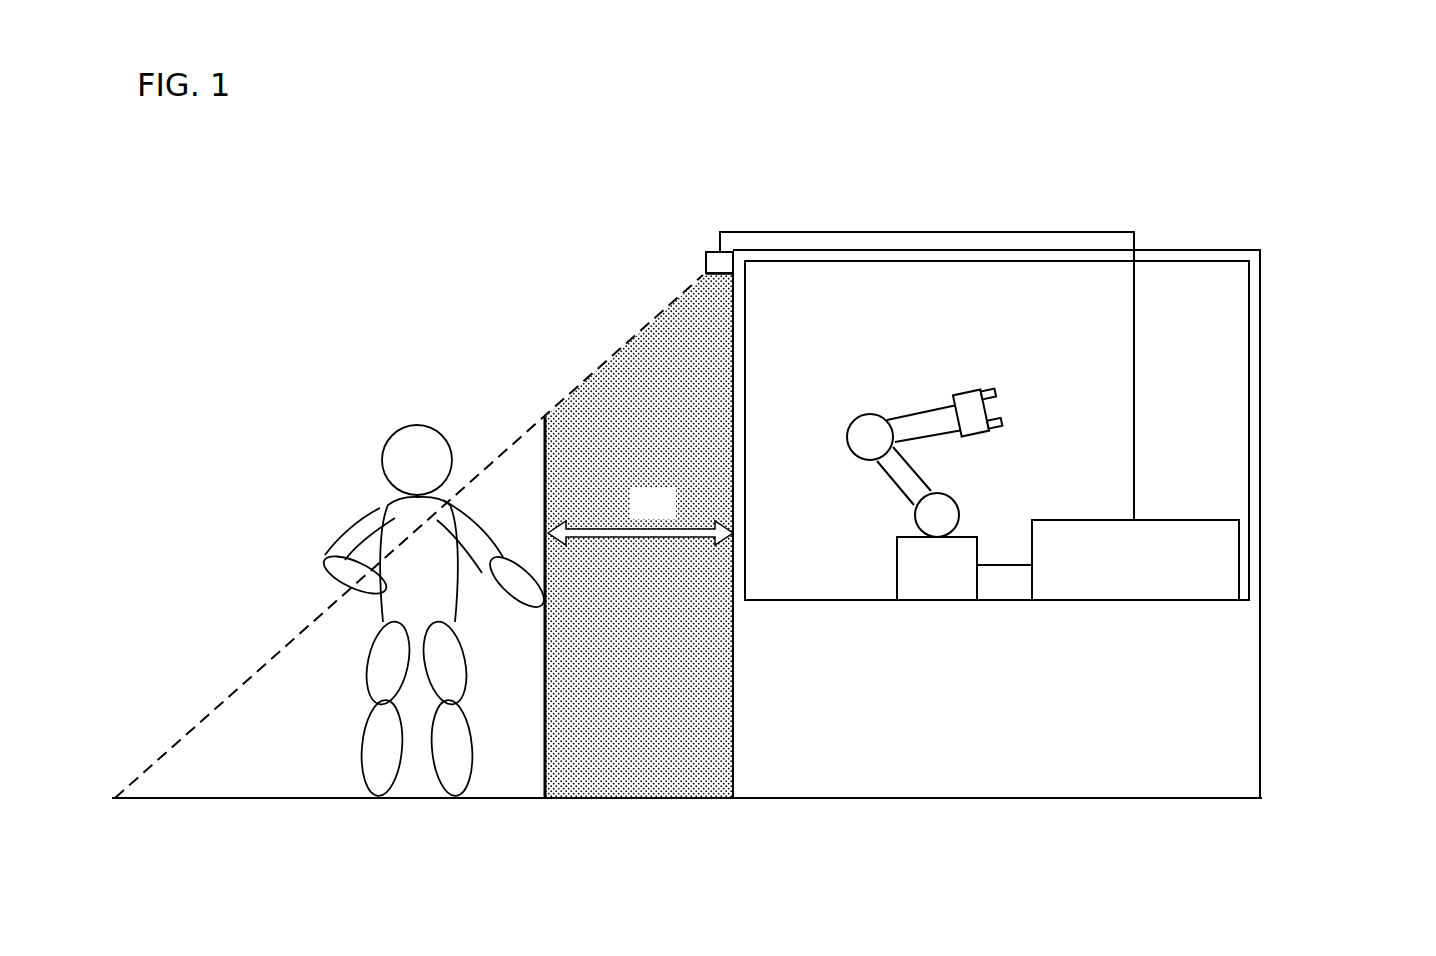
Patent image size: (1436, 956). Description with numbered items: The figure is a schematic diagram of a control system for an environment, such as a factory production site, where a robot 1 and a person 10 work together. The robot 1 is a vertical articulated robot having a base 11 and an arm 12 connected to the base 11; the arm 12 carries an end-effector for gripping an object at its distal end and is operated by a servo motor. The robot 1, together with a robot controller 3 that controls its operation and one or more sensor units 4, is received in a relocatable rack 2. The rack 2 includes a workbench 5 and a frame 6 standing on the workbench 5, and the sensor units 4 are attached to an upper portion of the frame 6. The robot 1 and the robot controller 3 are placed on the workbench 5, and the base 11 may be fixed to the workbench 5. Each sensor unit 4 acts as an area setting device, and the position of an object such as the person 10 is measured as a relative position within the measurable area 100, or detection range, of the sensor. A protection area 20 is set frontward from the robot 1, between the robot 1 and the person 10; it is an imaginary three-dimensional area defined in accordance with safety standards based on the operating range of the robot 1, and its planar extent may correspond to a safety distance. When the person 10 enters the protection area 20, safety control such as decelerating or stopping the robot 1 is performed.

The robot 1 is at (923, 443).
The rack 2 is at (1178, 247).
The robot controller 3 is at (1183, 518).
The sensor unit 4 is at (705, 261).
The workbench 5 is at (1262, 705).
The frame 6 is at (1262, 338).
The person 10 is at (376, 505).
The base 11 is at (893, 565).
The arm 12 is at (937, 410).
The protection area 20 is at (645, 355).
The measurable area 100 is at (535, 425).